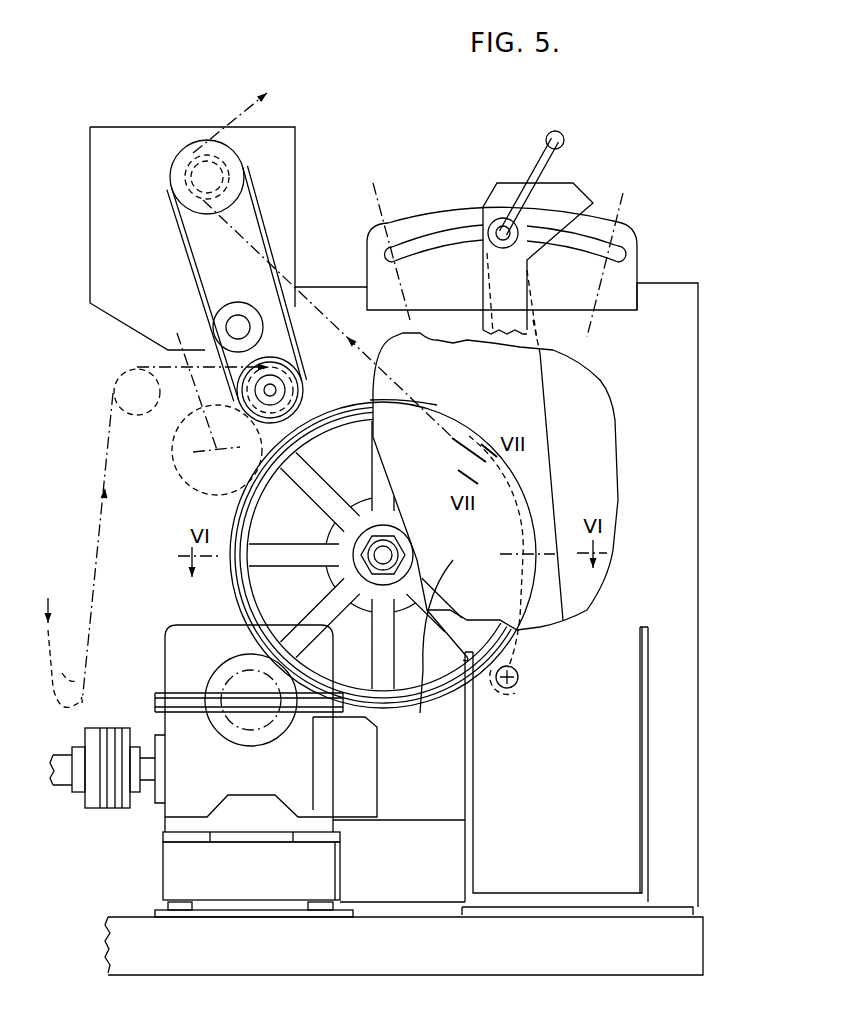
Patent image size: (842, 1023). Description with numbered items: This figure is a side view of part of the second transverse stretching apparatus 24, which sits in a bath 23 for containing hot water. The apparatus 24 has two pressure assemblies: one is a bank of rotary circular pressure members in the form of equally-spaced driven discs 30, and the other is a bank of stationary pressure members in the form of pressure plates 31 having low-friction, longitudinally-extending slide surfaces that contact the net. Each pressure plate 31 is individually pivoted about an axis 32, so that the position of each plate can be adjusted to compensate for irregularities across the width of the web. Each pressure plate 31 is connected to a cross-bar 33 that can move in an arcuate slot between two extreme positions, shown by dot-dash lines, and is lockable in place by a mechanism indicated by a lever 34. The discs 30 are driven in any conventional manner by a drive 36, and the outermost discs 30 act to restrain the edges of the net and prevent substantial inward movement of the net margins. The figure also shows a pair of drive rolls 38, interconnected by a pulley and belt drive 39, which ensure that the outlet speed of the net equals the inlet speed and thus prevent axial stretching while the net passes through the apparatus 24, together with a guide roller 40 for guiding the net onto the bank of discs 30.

The bath 23 is at (660, 283).
The second transverse stretching apparatus 24 is at (160, 529).
The driven discs 30 is at (423, 706).
The pressure plates 31 is at (542, 500).
The axis 32 is at (507, 690).
The cross-bar 33 is at (500, 228).
The lever 34 is at (540, 168).
The drive 36 is at (185, 798).
The drive rolls 38 is at (230, 173).
The pulley and belt drive 39 is at (267, 247).
The guide roller 40 is at (158, 447).